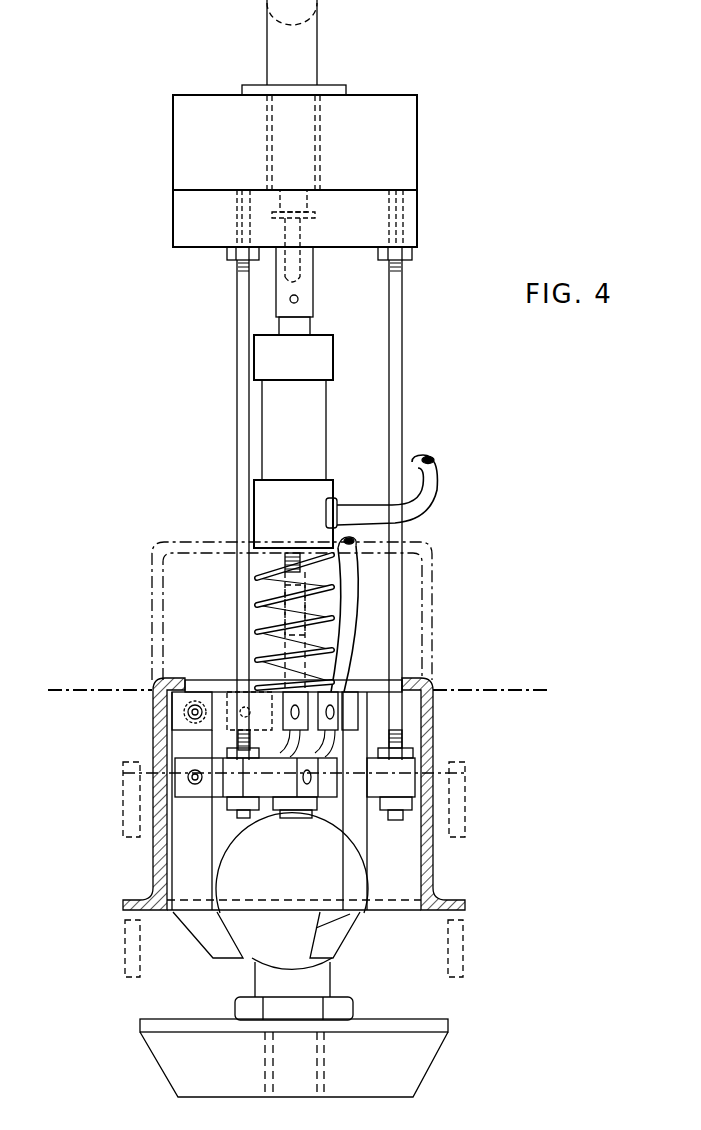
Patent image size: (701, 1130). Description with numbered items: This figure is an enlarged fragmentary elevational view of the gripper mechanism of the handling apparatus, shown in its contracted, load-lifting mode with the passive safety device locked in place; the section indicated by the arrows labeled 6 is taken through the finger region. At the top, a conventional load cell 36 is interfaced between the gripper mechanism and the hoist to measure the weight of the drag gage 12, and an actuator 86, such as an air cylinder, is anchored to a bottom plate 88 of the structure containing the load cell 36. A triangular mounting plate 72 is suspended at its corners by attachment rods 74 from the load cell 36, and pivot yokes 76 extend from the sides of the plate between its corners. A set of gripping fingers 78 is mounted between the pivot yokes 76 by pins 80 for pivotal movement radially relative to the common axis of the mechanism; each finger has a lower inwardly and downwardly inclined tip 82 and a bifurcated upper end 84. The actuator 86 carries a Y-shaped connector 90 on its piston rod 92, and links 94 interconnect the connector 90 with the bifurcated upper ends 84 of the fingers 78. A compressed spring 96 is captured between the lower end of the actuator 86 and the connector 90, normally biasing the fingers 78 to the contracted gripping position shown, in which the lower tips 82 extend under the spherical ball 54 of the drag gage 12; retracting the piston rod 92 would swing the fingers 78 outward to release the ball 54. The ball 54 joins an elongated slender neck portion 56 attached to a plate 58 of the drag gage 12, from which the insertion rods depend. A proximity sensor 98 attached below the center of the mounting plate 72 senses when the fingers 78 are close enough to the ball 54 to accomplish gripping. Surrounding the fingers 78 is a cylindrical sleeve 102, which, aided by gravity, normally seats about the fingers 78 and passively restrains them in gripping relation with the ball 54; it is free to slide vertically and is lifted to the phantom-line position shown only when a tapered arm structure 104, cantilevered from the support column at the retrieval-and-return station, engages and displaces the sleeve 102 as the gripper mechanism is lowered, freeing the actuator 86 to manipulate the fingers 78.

The load cell 36 is at (414, 180).
The bottom plate 88 is at (180, 220).
The attachment rods 74 is at (237, 362).
The actuator 86 is at (322, 425).
The compressed spring 96 is at (256, 581).
The piston rod 92 is at (267, 647).
The links 94 is at (222, 692).
The bifurcated upper end 84 is at (180, 711).
The cylindrical sleeve 102 is at (433, 604).
The Y-shaped connector 90 is at (238, 743).
The pins 80 is at (180, 773).
The tapered arm structure 104 is at (123, 798).
The pivot yokes 76 is at (198, 801).
The mounting plate 72 is at (263, 803).
The proximity sensor 98 is at (291, 813).
The gripping fingers 78 is at (170, 860).
The lower tip 82 is at (202, 940).
The spherical ball 54 is at (292, 941).
The neck portion 56 is at (328, 978).
The drag gage 12 is at (455, 1021).
The plate 58 is at (435, 1050).
The section line 6- 6 is at (75, 718).